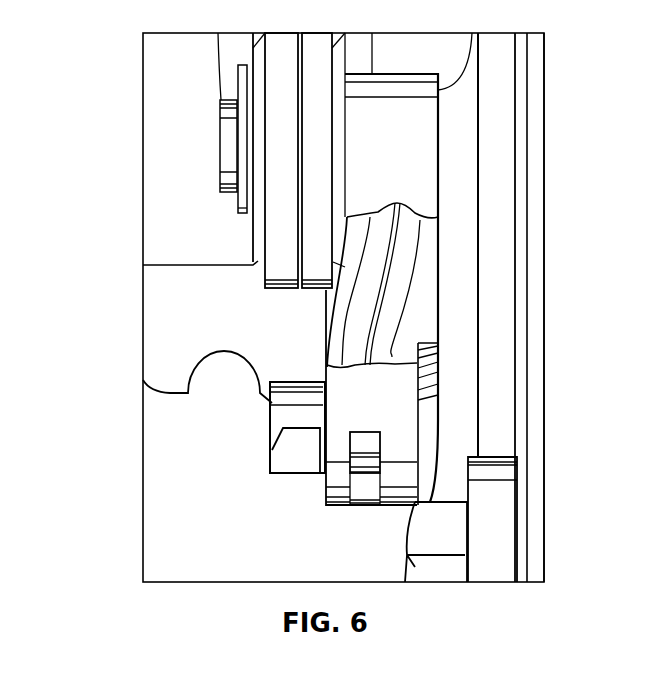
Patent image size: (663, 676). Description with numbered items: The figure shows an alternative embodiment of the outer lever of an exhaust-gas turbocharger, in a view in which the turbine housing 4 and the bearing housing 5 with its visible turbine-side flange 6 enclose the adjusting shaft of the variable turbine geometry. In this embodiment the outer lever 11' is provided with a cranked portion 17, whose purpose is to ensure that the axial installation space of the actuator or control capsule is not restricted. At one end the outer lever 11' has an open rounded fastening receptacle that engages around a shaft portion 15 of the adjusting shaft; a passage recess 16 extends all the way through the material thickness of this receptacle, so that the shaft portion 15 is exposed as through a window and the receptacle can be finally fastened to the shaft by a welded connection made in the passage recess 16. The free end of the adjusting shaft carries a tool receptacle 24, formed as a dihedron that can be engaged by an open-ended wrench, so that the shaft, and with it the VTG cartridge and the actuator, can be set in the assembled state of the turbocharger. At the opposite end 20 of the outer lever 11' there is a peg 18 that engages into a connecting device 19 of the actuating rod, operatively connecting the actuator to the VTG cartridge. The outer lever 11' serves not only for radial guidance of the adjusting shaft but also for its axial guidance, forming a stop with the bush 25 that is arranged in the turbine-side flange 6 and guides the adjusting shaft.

The turbine housing 4 is at (542, 155).
The bearing housing 5 is at (173, 552).
The turbine-side flange 6 is at (498, 260).
The outer lever 11' is at (193, 292).
The shaft portion 15 is at (365, 445).
The passage recess 16 is at (365, 488).
The cranked portion 17 is at (371, 327).
The peg 18 is at (228, 148).
The connecting device 19 is at (253, 50).
The end of the outer lever 20 is at (407, 118).
The tool receptacle 24 is at (295, 462).
The bush 25 is at (428, 395).